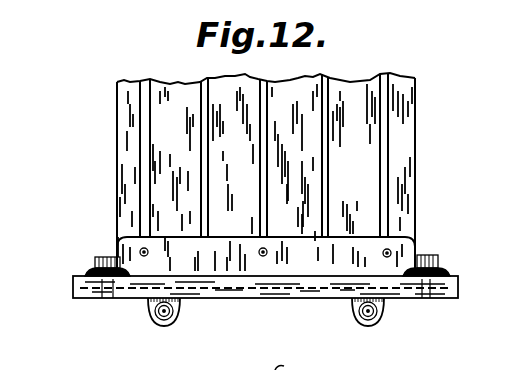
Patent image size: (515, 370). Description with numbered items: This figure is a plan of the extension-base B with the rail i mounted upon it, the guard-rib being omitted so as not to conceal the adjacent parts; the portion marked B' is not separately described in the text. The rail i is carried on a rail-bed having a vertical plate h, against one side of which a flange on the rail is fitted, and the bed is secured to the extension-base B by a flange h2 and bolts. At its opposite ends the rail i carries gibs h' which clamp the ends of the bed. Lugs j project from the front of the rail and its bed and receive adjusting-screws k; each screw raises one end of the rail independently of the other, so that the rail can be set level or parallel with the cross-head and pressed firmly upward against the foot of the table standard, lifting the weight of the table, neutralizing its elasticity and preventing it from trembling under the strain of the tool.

The extension-base B is at (266, 174).
The board of the car body B' is at (350, 163).
The rail i is at (184, 275).
The vertical plate h is at (265, 273).
The flange h2 is at (265, 264).
The gibs h' is at (277, 253).
The lugs j is at (386, 310).
The adjusting-screws k is at (356, 313).